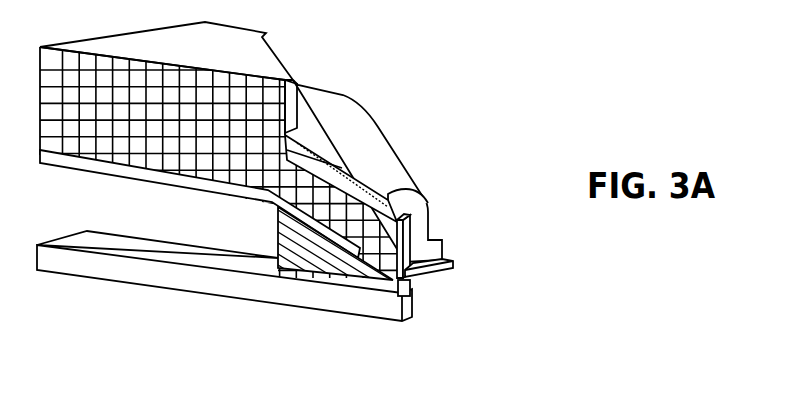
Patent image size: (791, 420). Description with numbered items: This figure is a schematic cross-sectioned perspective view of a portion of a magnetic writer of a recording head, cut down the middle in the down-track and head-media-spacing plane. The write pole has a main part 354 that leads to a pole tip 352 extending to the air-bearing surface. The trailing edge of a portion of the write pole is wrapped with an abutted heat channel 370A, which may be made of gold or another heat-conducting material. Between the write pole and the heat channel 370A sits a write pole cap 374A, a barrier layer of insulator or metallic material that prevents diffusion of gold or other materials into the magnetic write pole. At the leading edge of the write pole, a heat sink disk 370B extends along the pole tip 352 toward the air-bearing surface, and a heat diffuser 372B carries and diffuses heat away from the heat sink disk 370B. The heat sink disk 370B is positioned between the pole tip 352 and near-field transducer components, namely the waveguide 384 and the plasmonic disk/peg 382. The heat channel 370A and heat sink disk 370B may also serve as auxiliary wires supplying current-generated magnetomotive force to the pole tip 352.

The main part of the write pole 354 is at (255, 62).
The heat channel 370A is at (383, 178).
The heat diffuser 372B is at (262, 197).
The heat sink disk 370B is at (310, 285).
The write pole cap 374A is at (409, 233).
The pole tip 352 is at (403, 258).
The plasmonic disk/peg 382 is at (410, 290).
The waveguide 384 is at (371, 316).